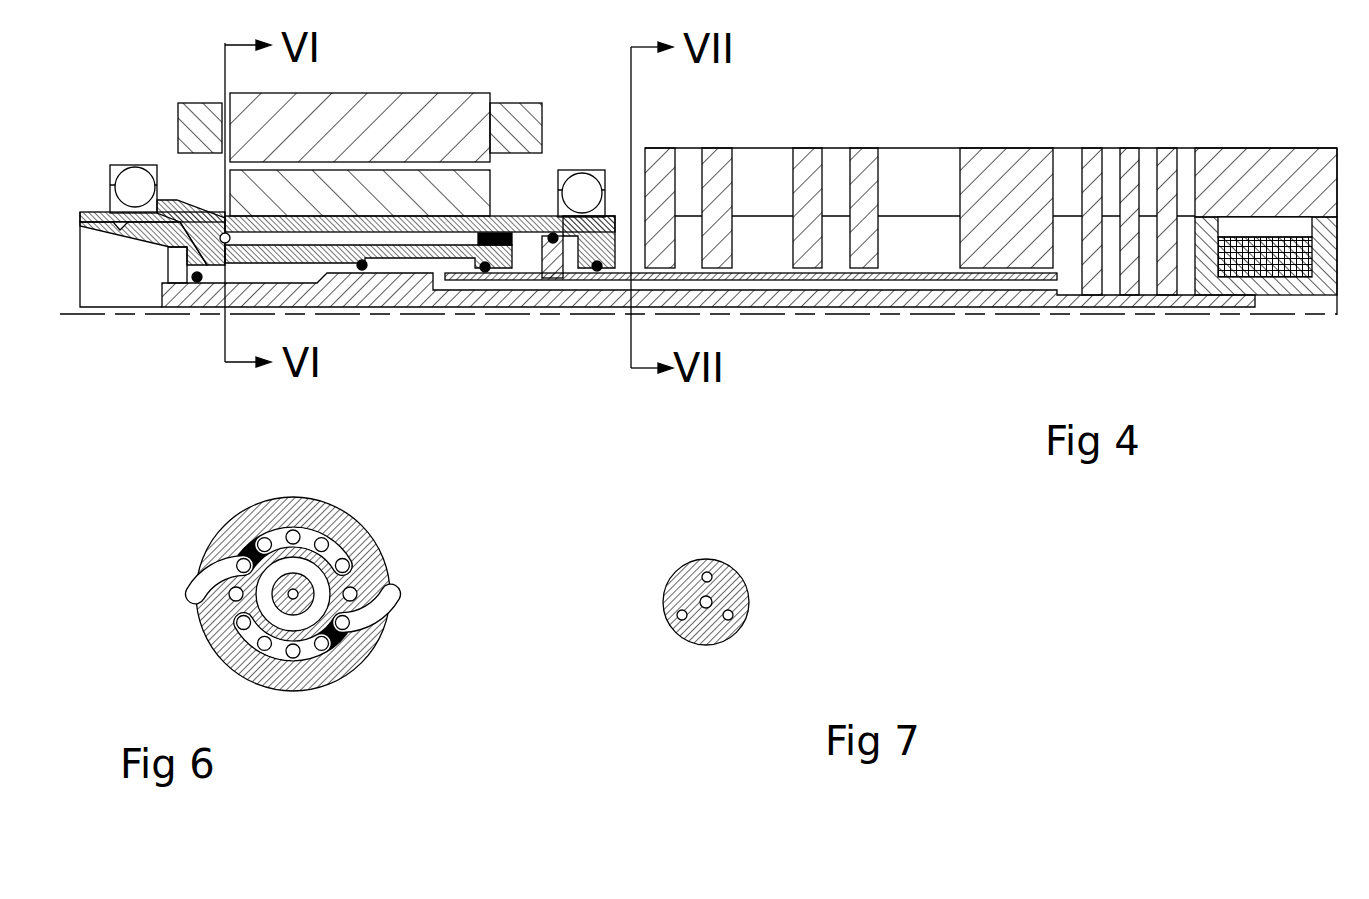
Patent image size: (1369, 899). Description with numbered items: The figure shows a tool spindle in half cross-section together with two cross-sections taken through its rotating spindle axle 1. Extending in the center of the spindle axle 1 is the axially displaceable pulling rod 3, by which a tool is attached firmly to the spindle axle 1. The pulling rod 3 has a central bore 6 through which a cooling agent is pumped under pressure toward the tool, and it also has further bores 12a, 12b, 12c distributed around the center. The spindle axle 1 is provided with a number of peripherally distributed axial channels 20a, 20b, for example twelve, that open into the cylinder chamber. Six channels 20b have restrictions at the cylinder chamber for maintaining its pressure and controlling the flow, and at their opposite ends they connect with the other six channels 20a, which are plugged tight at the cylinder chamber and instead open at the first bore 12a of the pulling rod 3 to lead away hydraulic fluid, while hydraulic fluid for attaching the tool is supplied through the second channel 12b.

In FIG. 6, the spindle axle 1 is at (257, 512).
In FIG. 6, the pulling rod 3 is at (296, 612).
In FIG. 7, the pulling rod 3 is at (735, 588).
In FIG. 6, the central bore 6 is at (297, 596).
In FIG. 7, the central bore 6 is at (708, 606).
In FIG. 6, the axial channels 20a is at (295, 533).
In FIG. 6, the axial channels 20b is at (324, 543).
In FIG. 7, the first bore 12a is at (710, 574).
In FIG. 7, the second channel 12b is at (733, 615).
In FIG. 7, the bore 12c is at (679, 618).